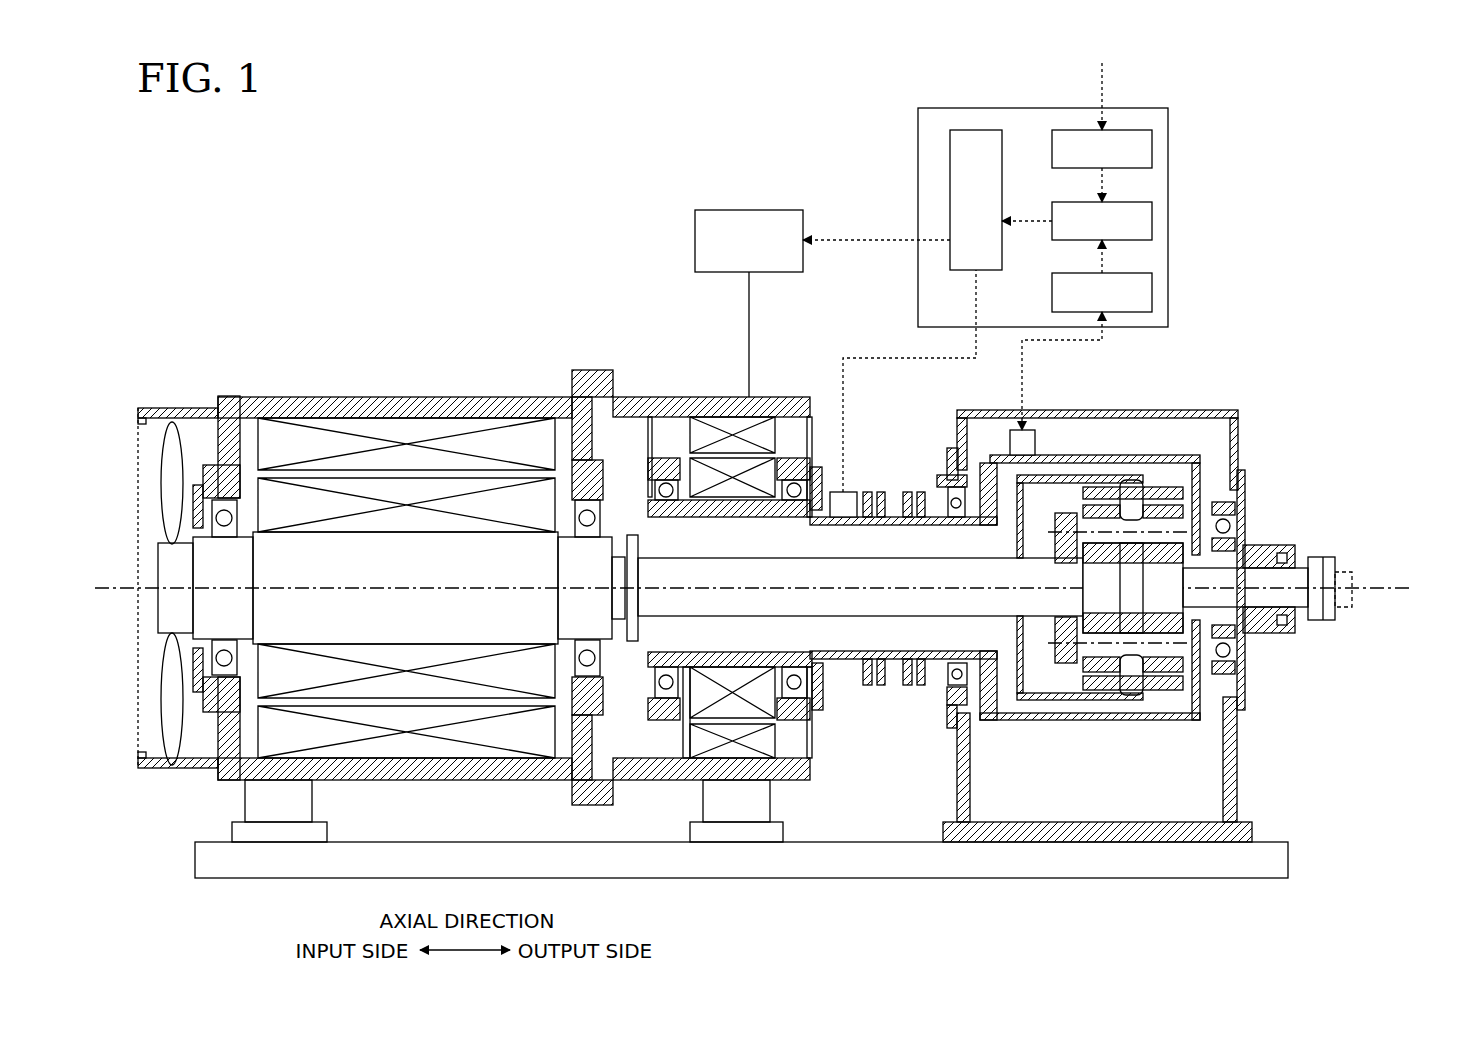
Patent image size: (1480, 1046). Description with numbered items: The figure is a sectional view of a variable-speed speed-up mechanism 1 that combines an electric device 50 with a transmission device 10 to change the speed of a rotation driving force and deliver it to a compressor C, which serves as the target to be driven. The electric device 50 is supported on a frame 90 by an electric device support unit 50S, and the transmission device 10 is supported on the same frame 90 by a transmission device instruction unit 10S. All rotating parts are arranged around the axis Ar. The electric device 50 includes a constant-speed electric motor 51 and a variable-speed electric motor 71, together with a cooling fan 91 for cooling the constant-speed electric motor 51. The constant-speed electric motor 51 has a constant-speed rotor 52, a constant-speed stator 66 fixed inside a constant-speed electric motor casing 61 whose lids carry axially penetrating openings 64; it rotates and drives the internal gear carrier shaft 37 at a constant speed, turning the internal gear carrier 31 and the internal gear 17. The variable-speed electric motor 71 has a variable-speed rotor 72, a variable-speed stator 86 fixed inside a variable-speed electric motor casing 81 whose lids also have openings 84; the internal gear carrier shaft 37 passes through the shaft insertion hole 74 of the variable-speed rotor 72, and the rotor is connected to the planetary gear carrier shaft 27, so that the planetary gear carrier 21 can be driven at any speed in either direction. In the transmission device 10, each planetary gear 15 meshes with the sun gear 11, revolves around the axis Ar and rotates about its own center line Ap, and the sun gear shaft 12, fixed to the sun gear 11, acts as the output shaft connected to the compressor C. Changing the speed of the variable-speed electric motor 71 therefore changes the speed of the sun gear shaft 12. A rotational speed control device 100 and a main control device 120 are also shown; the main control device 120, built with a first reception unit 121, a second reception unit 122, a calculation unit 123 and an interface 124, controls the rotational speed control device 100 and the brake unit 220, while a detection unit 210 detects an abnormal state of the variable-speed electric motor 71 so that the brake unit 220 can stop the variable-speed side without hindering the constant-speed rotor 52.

The variable-speed speed-up mechanism 1 is at (1305, 110).
The transmission device 10 is at (1238, 402).
The transmission device instruction unit 10S is at (1232, 780).
The sun gear 11 is at (1183, 598).
The sun gear shaft 12 is at (1302, 600).
The planetary gear 15 is at (1172, 527).
The internal gear 17 is at (1158, 487).
The planetary gear carrier 21 is at (1170, 507).
The planetary gear carrier shaft 27 is at (970, 510).
The internal gear carrier 31 is at (1080, 700).
The internal gear carrier shaft 37 is at (985, 600).
The electric device 50 is at (228, 392).
The electric device support unit 50S is at (302, 800).
The constant-speed electric motor 51 is at (268, 393).
The constant-speed rotor 52 is at (498, 470).
The constant-speed electric motor casing 61 is at (432, 405).
The opening 64 is at (220, 435).
The constant-speed stator 66 is at (332, 442).
The variable-speed electric motor 71 is at (787, 393).
The variable-speed rotor 72 is at (734, 670).
The shaft insertion hole 74 is at (643, 533).
The variable-speed electric motor casing 81 is at (638, 770).
The opening 84 is at (663, 432).
The variable-speed stator 86 is at (746, 842).
The frame 90 is at (1275, 858).
The cooling fan 91 is at (172, 742).
The rotational speed control device 100 is at (749, 208).
The main control device 120 is at (1140, 106).
The first reception unit 121 is at (1152, 156).
The second reception unit 122 is at (1152, 292).
The calculation unit 123 is at (1152, 222).
The interface 124 is at (972, 130).
The detection unit 210 is at (840, 490).
The brake unit 220 is at (1030, 440).
The center line Ap is at (1175, 528).
The axis Ar is at (1377, 587).
The compressor C is at (1325, 557).